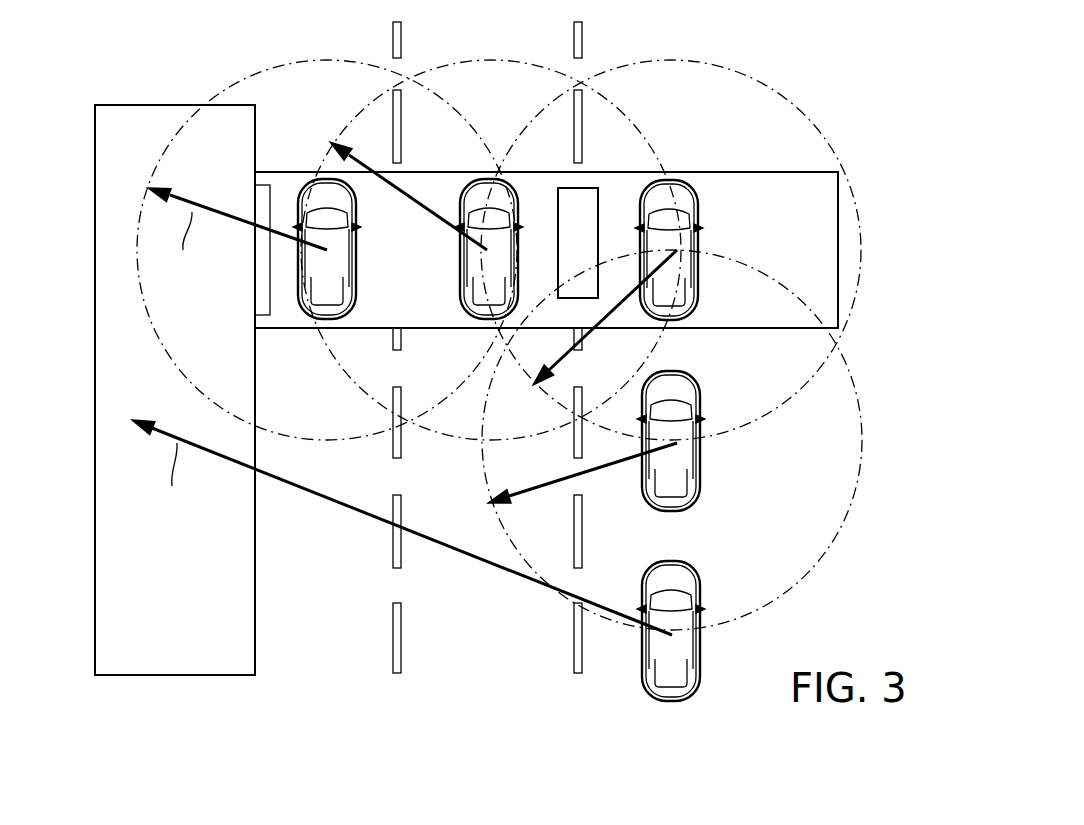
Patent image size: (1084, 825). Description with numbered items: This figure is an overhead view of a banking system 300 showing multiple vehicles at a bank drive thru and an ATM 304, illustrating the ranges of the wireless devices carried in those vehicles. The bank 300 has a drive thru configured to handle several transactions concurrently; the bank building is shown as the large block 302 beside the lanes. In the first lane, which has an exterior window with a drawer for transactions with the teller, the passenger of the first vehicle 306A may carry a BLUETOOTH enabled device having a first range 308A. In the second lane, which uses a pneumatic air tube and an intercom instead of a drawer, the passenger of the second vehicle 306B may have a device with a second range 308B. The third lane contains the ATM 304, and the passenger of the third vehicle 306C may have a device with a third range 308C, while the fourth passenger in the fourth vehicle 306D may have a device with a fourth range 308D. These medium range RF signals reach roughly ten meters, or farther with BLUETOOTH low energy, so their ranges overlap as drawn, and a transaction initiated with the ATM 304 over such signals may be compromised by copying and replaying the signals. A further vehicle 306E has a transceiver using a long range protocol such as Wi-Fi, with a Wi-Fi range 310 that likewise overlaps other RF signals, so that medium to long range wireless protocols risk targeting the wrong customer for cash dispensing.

The banking system 300 is at (653, 87).
The building / bank 302 is at (162, 105).
The ATM 304 is at (598, 218).
The first vehicle 306A is at (318, 326).
The second vehicle 306B is at (470, 328).
The third vehicle 306C is at (683, 318).
The fourth vehicle 306D is at (682, 512).
The vehicle 306E is at (702, 652).
The first range 308A is at (233, 207).
The second range 308B is at (438, 180).
The third range 308C is at (622, 305).
The fourth range 308D is at (618, 464).
The Wi-Fi range 310 is at (228, 462).